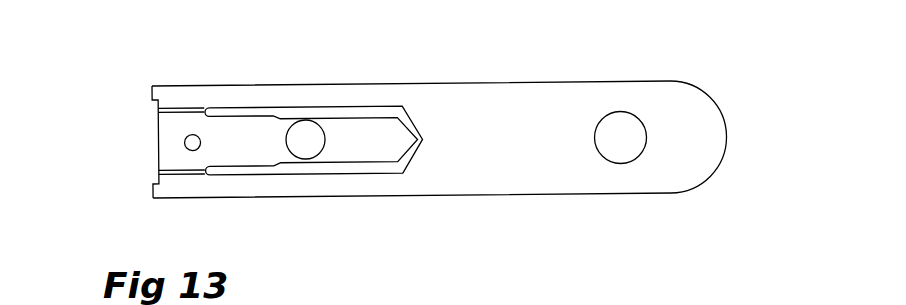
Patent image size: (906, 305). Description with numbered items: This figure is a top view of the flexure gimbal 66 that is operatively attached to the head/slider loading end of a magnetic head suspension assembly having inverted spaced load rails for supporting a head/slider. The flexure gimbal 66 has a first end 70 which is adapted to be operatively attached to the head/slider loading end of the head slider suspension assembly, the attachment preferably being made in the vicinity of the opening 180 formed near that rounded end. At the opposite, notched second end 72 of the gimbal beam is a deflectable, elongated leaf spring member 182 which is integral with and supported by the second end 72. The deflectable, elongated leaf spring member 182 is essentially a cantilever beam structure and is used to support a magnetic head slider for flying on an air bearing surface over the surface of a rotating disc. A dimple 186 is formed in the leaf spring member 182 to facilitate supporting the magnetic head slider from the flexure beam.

The flexure gimbal 66 is at (597, 75).
The first end 70 is at (719, 108).
The second end 72 is at (156, 193).
The opening 180 is at (625, 155).
The deflectable, elongated leaf spring member 182 is at (248, 153).
The dimple 186 is at (310, 157).